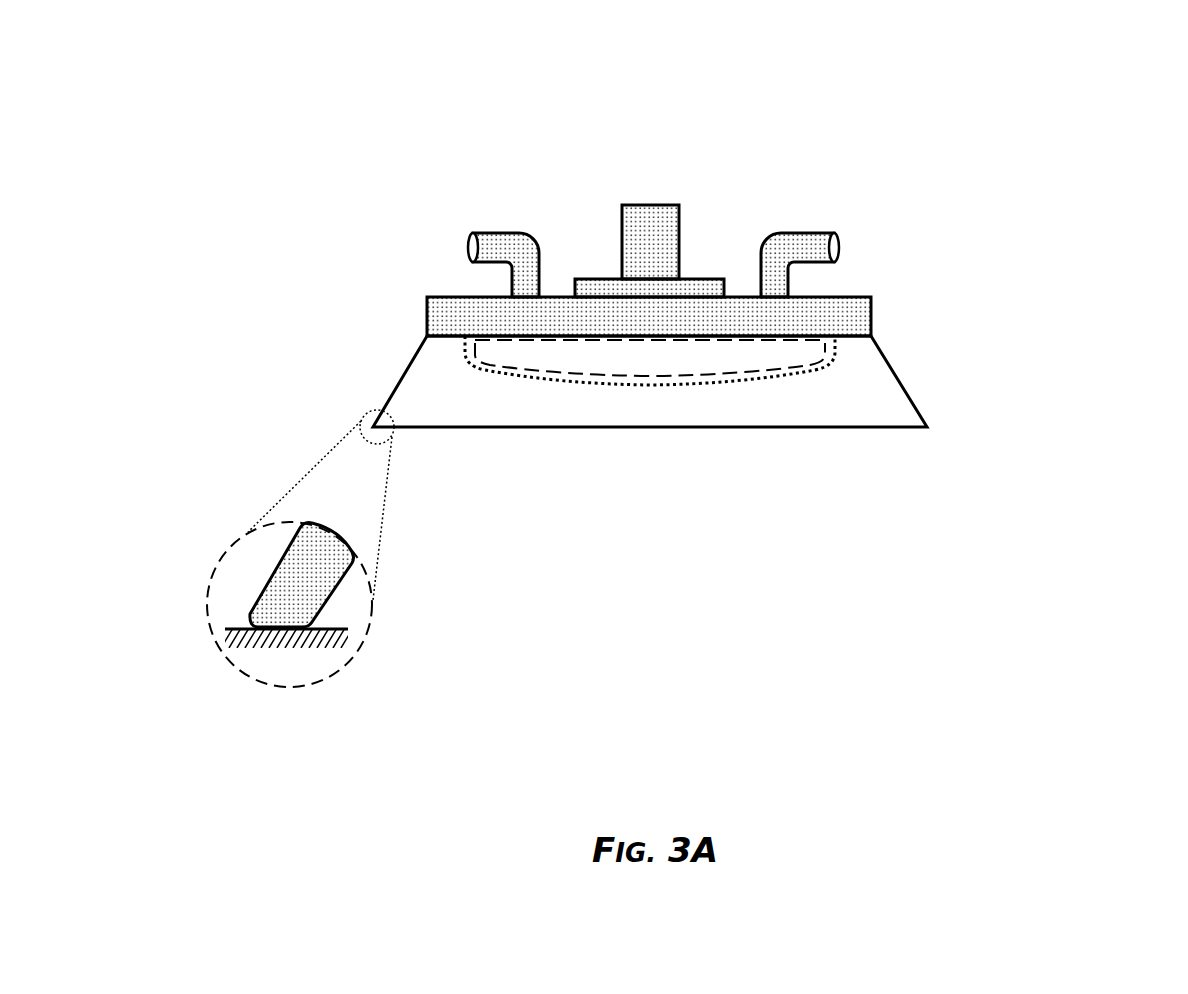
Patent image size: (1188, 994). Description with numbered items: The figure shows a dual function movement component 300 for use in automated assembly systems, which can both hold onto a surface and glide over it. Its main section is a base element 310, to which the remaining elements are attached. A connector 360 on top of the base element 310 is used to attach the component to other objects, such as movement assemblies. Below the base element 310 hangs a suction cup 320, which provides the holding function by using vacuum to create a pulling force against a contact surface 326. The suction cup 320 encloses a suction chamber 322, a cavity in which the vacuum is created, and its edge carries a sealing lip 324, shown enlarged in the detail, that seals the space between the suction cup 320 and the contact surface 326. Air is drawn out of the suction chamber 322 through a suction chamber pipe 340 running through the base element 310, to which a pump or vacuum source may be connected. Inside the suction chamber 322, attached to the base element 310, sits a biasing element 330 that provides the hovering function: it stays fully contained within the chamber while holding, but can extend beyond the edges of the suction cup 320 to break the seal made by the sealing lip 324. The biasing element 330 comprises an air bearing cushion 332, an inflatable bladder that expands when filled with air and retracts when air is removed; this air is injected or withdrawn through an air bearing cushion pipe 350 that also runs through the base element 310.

The dual function movement component 300 is at (308, 129).
The base element 310 is at (843, 316).
The suction cup 320 is at (394, 367).
The suction chamber 322 is at (863, 384).
The sealing lip 324 is at (295, 592).
The contact surface 326 is at (257, 666).
The biasing element 330 is at (620, 400).
The air bearing cushion 332 is at (742, 354).
The suction chamber pipe 340 is at (517, 252).
The air bearing cushion pipe 350 is at (778, 251).
The connector 360 is at (649, 234).